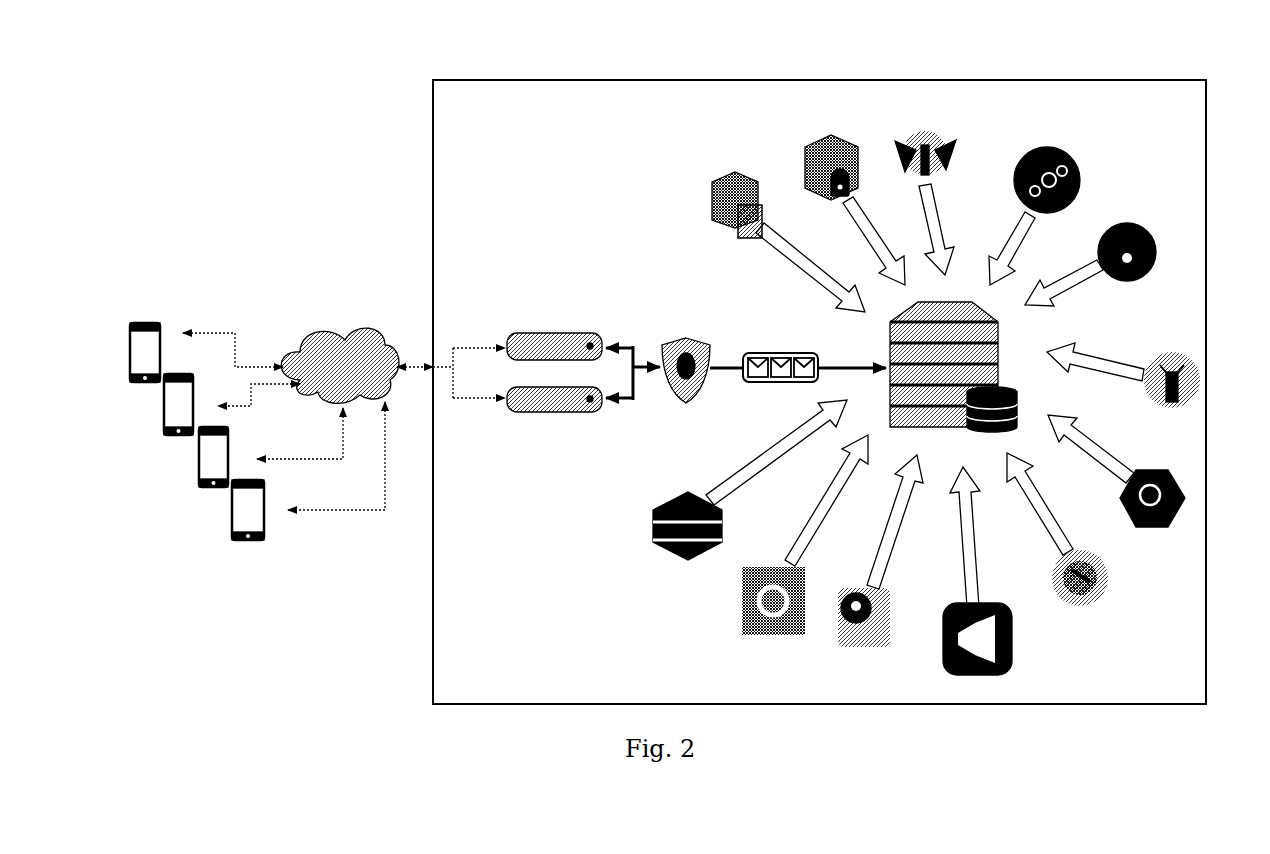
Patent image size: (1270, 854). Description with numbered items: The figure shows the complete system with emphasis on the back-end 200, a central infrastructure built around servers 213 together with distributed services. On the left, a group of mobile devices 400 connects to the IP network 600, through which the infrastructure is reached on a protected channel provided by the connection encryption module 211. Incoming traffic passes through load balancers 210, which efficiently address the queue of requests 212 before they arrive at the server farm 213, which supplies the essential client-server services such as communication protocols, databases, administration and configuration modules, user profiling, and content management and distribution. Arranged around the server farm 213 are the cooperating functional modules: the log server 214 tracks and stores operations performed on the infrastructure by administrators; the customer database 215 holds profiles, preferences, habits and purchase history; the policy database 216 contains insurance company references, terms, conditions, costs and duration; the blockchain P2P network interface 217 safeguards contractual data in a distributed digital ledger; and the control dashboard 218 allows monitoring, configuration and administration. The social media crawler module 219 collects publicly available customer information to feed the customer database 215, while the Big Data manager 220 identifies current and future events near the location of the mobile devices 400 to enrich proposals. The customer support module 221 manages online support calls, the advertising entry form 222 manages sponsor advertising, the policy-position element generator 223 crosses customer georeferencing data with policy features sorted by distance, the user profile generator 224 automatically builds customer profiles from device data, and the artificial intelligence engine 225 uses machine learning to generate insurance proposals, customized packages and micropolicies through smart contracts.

The back-end 200 is at (463, 72).
The mobile devices 400 is at (215, 523).
The IP network 600 is at (325, 350).
The load balancers 210 is at (513, 336).
The connection encryption module 211 is at (658, 336).
The queue of requests 212 is at (740, 358).
The server farm 213 is at (886, 350).
The log server 214 is at (716, 213).
The customer database 215 is at (802, 177).
The policy database 216 is at (913, 160).
The blockchain P2P network interface 217 is at (1020, 163).
The control dashboard 218 is at (1158, 208).
The social media crawler module 219 is at (1183, 350).
The Big Data manager 220 is at (1165, 531).
The customer support module 221 is at (1100, 611).
The advertising entry form 222 is at (1016, 632).
The policy-position element generator 223 is at (896, 630).
The user profile generator 224 is at (728, 628).
The artificial intelligence engine 225 is at (646, 538).